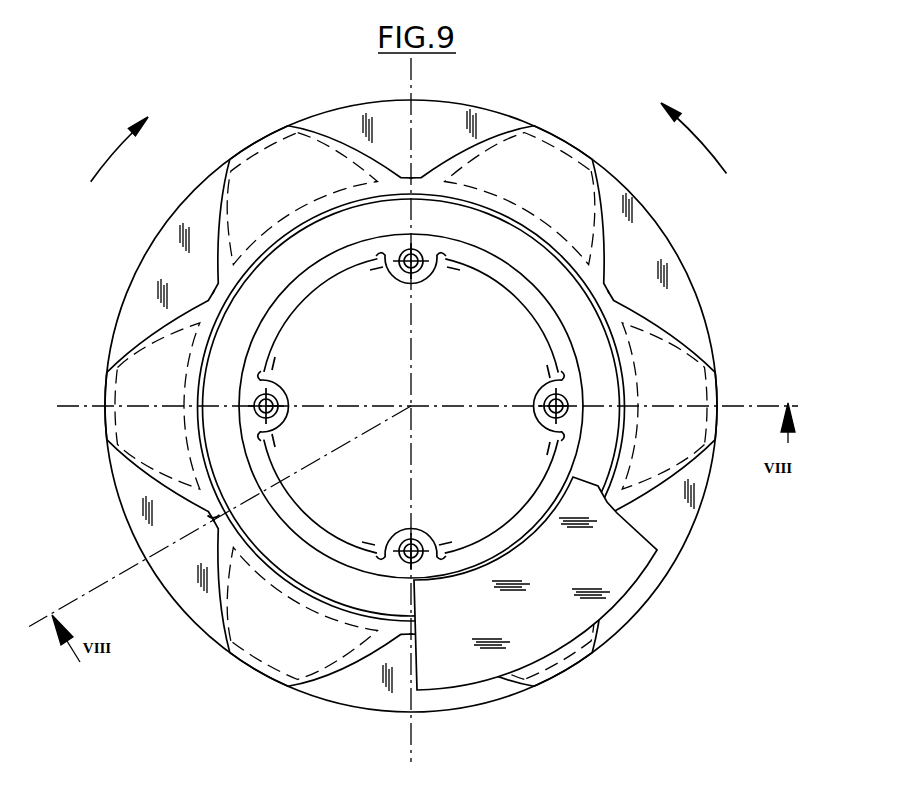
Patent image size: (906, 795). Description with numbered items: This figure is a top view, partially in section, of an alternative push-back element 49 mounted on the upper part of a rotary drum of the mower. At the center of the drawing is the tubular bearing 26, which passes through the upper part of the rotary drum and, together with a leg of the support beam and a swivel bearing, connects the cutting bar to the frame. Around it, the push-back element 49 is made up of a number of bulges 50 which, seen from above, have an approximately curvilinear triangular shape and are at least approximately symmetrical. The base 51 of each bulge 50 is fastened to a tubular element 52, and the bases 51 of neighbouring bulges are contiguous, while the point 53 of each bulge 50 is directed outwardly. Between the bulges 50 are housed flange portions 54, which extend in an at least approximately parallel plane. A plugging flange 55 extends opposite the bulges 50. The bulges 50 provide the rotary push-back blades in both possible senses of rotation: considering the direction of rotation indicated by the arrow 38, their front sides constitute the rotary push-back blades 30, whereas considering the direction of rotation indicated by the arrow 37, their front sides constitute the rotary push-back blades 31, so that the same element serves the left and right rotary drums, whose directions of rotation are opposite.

The tubular bearing 26 is at (510, 277).
The rotary push-back blades 30 is at (325, 132).
The rotary push-back blades 31 is at (505, 130).
The arrow 37 is at (718, 160).
The arrow 38 is at (108, 160).
The push-back element 49 is at (690, 252).
The bulges 50 is at (412, 408).
The base 51 is at (467, 190).
The tubular element 52 is at (214, 520).
The point 53 is at (277, 128).
The flange portions 54 is at (388, 123).
The plugging flange 55 is at (608, 557).